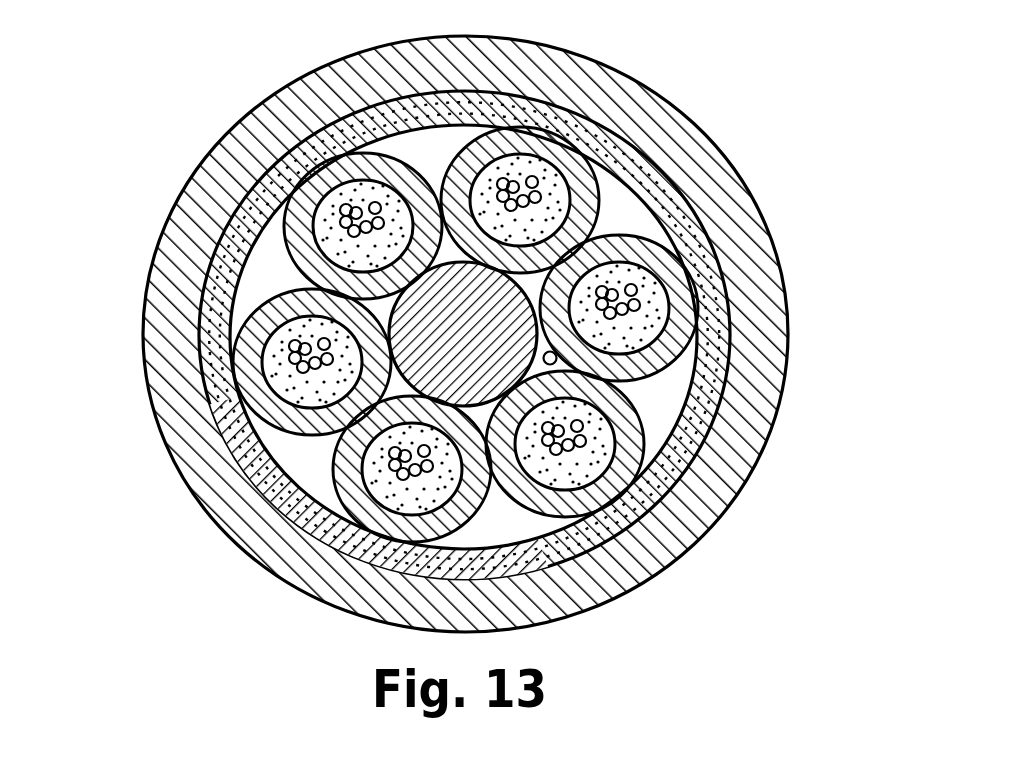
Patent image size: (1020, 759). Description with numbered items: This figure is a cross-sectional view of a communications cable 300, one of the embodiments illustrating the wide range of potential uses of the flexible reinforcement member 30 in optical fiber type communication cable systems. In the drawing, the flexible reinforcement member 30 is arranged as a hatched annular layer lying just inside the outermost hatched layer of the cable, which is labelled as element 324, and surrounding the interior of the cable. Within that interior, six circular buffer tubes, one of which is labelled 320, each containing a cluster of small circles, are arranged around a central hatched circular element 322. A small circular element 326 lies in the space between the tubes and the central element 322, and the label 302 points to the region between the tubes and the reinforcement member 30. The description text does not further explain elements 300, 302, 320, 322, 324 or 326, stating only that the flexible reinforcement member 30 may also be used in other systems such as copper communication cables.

The fiber optic cable 300 is at (277, 56).
The flexible reinforcement member 30 is at (582, 112).
The cable core interstice 302 is at (603, 180).
The buffer tube 320 is at (358, 197).
The central strength member 322 is at (490, 331).
The outer jacket 324 is at (146, 318).
The ripcord 326 is at (544, 370).